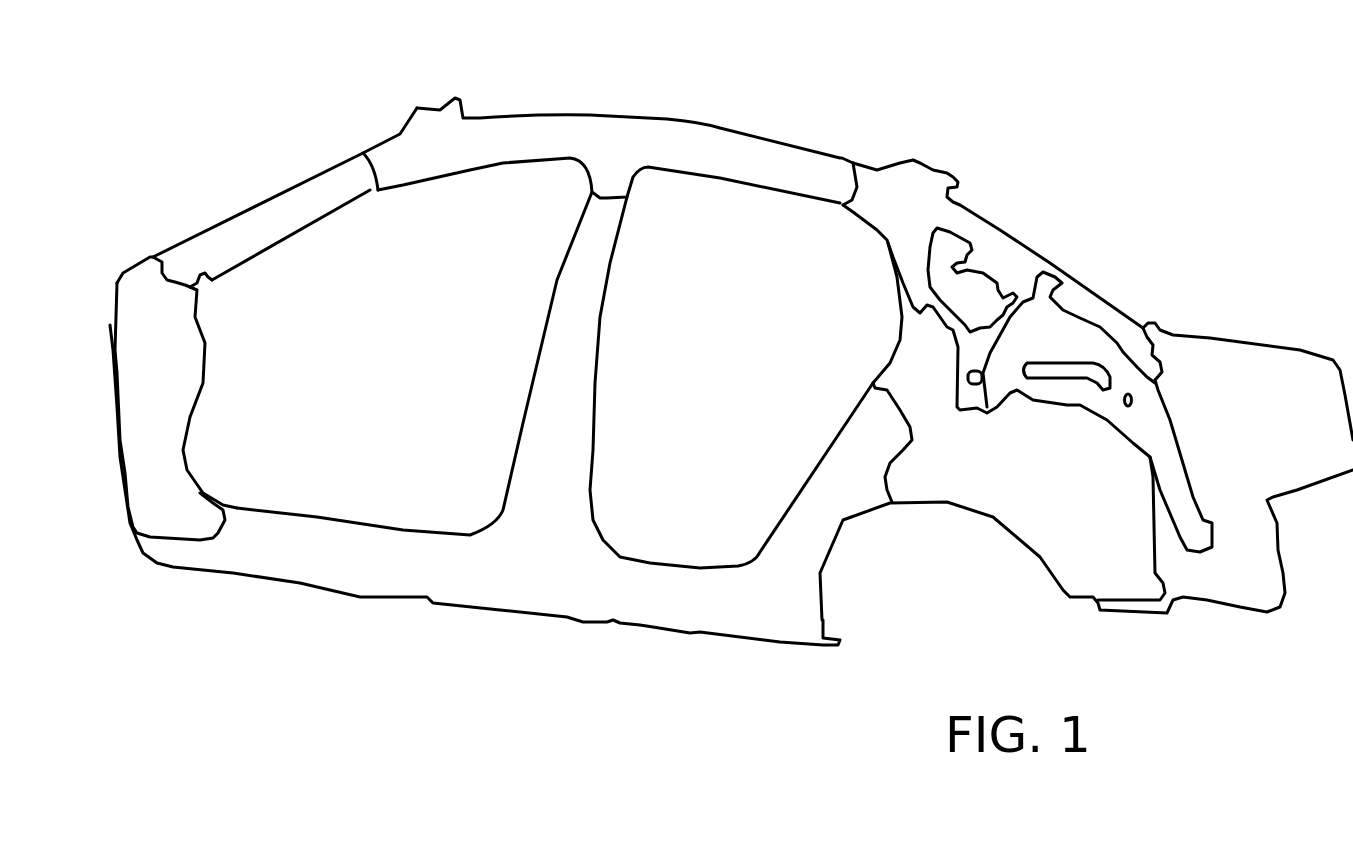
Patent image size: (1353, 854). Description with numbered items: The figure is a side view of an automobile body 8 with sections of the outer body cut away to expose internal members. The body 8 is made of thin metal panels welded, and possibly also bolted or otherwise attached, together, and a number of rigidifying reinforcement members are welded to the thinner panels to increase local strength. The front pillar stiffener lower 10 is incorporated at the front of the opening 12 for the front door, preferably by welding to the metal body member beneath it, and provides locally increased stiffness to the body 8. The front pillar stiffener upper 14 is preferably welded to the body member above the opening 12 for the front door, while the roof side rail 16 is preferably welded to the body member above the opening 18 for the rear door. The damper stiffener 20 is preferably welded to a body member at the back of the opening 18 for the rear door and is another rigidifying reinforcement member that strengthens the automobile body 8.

The automobile body 8 is at (480, 685).
The front pillar stiffener lower 10 is at (177, 503).
The opening for the front door 12 is at (385, 473).
The front pillar stiffener upper 14 is at (258, 193).
The roof side rail 16 is at (677, 133).
The opening for the rear door 18 is at (670, 505).
The damper stiffener 20 is at (966, 222).